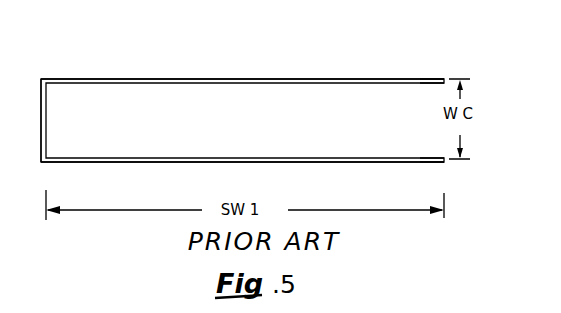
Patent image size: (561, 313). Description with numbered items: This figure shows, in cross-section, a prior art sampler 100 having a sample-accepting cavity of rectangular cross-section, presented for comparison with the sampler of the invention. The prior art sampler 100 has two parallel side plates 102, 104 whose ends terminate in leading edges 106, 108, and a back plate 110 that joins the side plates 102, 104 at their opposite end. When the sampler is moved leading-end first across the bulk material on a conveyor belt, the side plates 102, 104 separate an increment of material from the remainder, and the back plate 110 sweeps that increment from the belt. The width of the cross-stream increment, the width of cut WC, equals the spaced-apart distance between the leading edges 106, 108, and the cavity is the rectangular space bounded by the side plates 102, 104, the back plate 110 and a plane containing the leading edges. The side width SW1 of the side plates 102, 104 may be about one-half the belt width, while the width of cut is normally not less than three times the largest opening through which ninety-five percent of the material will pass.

The prior art sampler 100 is at (239, 78).
The side plate 102 is at (200, 163).
The side plate 104 is at (128, 78).
The leading edge 106 is at (444, 160).
The leading edge 108 is at (444, 79).
The back plate 110 is at (42, 107).